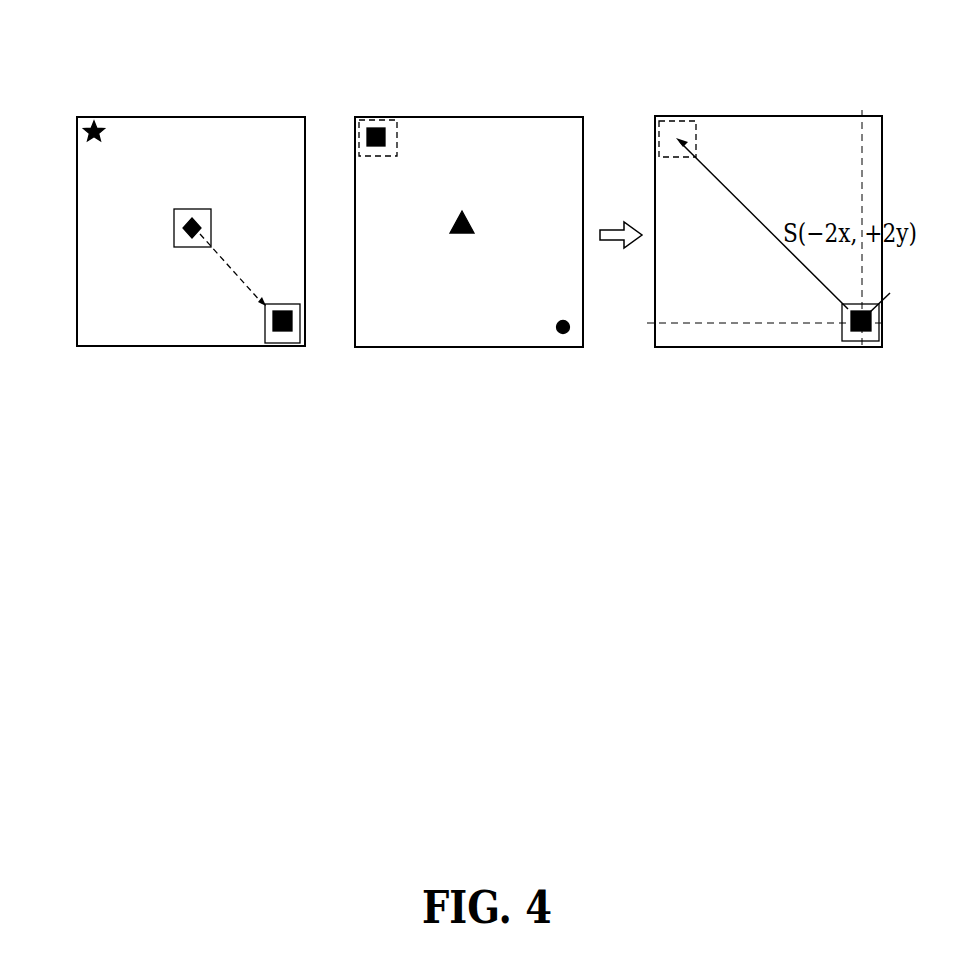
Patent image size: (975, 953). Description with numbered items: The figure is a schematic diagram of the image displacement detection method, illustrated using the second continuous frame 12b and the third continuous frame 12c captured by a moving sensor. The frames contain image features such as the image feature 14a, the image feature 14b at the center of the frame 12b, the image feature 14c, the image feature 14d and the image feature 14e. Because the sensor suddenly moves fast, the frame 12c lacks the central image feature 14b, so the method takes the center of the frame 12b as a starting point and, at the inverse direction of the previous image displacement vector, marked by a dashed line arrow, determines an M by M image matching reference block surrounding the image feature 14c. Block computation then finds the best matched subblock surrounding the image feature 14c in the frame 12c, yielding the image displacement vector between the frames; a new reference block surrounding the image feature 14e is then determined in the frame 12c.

The second continuous frame 12b is at (200, 112).
The third continuous frame 12c is at (476, 112).
The image feature 14a is at (88, 135).
The image feature 14b is at (175, 245).
The image feature 14c is at (373, 143).
The image feature 14d is at (463, 231).
The image feature 14e is at (565, 334).